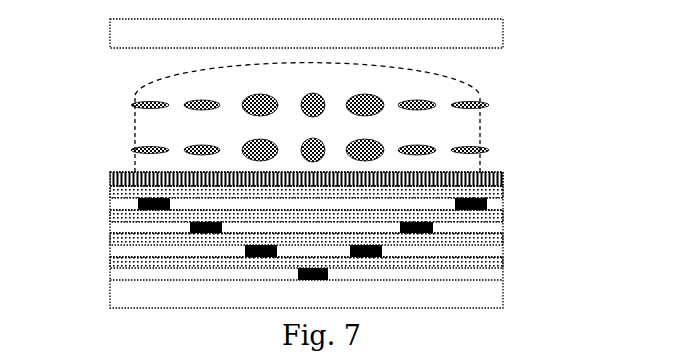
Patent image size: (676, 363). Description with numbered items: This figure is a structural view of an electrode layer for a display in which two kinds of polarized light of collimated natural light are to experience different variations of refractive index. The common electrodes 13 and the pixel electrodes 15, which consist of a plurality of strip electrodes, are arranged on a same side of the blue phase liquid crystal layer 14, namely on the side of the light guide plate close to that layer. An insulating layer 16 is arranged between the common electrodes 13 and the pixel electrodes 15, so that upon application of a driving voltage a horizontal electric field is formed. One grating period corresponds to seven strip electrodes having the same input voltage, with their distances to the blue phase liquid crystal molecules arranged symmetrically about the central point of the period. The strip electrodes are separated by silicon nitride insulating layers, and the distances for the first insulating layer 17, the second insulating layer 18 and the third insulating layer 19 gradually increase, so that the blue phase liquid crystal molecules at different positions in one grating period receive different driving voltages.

The common electrodes 13 is at (487, 175).
The blue phase liquid crystal layer 14 is at (470, 120).
The pixel electrodes 15 is at (138, 205).
The insulating layer 16 is at (480, 195).
The first insulating layer 17 is at (487, 217).
The second insulating layer 18 is at (487, 242).
The third insulating layer 19 is at (487, 262).